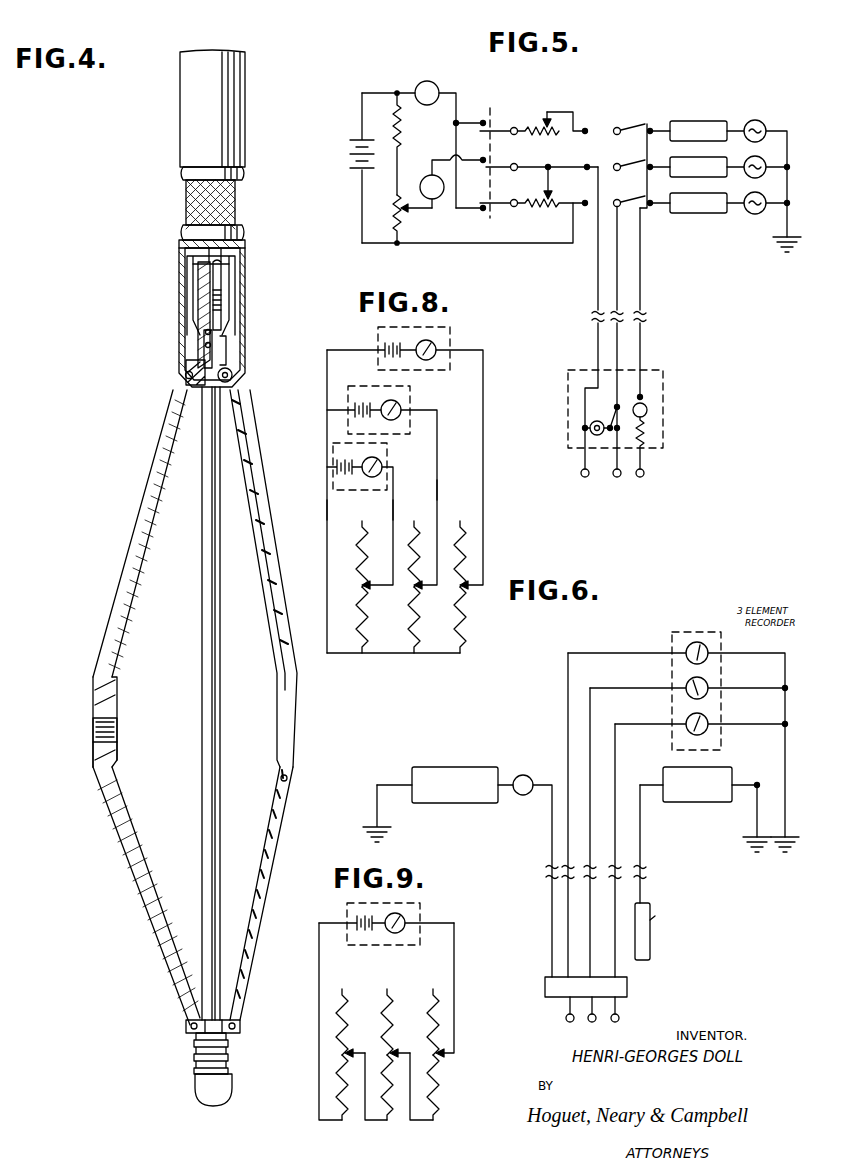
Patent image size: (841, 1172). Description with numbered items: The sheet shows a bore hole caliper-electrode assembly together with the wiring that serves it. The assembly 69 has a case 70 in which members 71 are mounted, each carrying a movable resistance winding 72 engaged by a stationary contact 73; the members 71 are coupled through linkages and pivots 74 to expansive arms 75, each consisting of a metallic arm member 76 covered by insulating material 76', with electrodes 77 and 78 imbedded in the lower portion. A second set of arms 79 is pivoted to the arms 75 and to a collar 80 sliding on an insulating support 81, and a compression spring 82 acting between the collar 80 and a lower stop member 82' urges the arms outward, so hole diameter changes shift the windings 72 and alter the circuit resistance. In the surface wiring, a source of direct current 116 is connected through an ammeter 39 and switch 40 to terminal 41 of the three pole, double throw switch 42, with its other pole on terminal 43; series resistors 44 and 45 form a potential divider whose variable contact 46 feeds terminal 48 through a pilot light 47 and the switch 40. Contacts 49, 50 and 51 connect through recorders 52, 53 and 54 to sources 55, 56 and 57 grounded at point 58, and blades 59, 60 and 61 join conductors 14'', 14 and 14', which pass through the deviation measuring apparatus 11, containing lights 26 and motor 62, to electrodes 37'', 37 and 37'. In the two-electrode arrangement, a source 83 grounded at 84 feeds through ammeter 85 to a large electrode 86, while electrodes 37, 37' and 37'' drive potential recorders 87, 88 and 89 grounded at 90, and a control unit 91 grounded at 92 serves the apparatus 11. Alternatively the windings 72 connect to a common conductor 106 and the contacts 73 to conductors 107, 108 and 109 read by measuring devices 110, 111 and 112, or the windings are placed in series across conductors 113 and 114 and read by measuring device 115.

In FIG. 4, the deviation measuring instrument 11 is at (177, 141).
In FIG. 5, the deviation measuring instrument 11 is at (567, 396).
In FIG. 6, the deviation measuring instrument 11 is at (650, 962).
In FIG. 5, the conductor 14 is at (575, 318).
In FIG. 5, the conductor 14' is at (646, 338).
In FIG. 5, the conductor 14'' is at (669, 302).
In FIG. 5, the lights 26 is at (590, 436).
In FIG. 5, the electrode 37 is at (560, 478).
In FIG. 6, the electrode 37 is at (553, 1014).
In FIG. 5, the middle electrode 37' is at (617, 486).
In FIG. 6, the middle electrode 37' is at (578, 1020).
In FIG. 5, the electrode 37'' is at (663, 469).
In FIG. 6, the electrode 37'' is at (641, 1009).
In FIG. 5, the ammeter 39 is at (430, 82).
In FIG. 5, the switch 40 is at (490, 121).
In FIG. 5, the terminal 41 is at (585, 128).
In FIG. 5, the three pole, double throw switch 42 is at (608, 121).
In FIG. 5, the second terminal 43 is at (574, 240).
In FIG. 5, the series resistor 44 is at (396, 210).
In FIG. 5, the series resistor 45 is at (399, 128).
In FIG. 5, the variable contact 46 is at (403, 212).
In FIG. 5, the pilot light 47 is at (441, 200).
In FIG. 5, the third terminal 48 is at (588, 166).
In FIG. 5, the contact 49 is at (650, 129).
In FIG. 5, the contact 50 is at (651, 165).
In FIG. 5, the contact 51 is at (650, 206).
In FIG. 5, the recorder 52 is at (715, 120).
In FIG. 5, the recorder 53 is at (727, 165).
In FIG. 5, the recorder 54 is at (695, 214).
In FIG. 5, the source of electrical energy 55 is at (762, 120).
In FIG. 5, the source of electrical energy 56 is at (767, 166).
In FIG. 5, the source of electrical energy 57 is at (765, 215).
In FIG. 5, the ground point 58 is at (782, 250).
In FIG. 5, the blade 59 is at (627, 119).
In FIG. 5, the blade 60 is at (616, 157).
In FIG. 5, the blade 61 is at (618, 192).
In FIG. 5, the motor 62 is at (647, 410).
In FIG. 4, the assembly 69 is at (248, 349).
In FIG. 4, the case 70 is at (180, 345).
In FIG. 4, the member 71 is at (200, 312).
In FIG. 4, the movable resistance winding 72 is at (197, 298).
In FIG. 8, the movable resistance winding 72 is at (458, 628).
In FIG. 9, the movable resistance winding 72 is at (344, 1112).
In FIG. 4, the stationary contact 73 is at (222, 262).
In FIG. 8, the stationary contact 73 is at (370, 582).
In FIG. 9, the stationary contact 73 is at (352, 1050).
In FIG. 4, the pivot 74 is at (233, 374).
In FIG. 4, the expansive arm 75 is at (262, 567).
In FIG. 4, the metallic arm member 76 is at (134, 533).
In FIG. 4, the insulating material 76' is at (96, 680).
In FIG. 4, the electrode 77 is at (95, 727).
In FIG. 4, the electrode 78 is at (95, 748).
In FIG. 4, the arm 79 is at (135, 866).
In FIG. 4, the collar 80 is at (224, 1035).
In FIG. 4, the insulating support 81 is at (206, 740).
In FIG. 4, the compression spring 82 is at (188, 1053).
In FIG. 4, the lower stop member 82' is at (232, 1090).
In FIG. 6, the source of electrical energy 83 is at (462, 767).
In FIG. 6, the ground 84 is at (374, 822).
In FIG. 6, the ammeter 85 is at (540, 766).
In FIG. 6, the electrode 86 is at (545, 985).
In FIG. 6, the potential indicating recorder 87 is at (686, 650).
In FIG. 6, the potential indicating recorder 88 is at (686, 686).
In FIG. 6, the potential indicating recorder 89 is at (686, 722).
In FIG. 6, the ground 90 is at (785, 852).
In FIG. 6, the control unit 91 is at (730, 767).
In FIG. 6, the ground 92 is at (745, 843).
In FIG. 8, the conductor 106 is at (328, 510).
In FIG. 8, the conductor 107 is at (393, 510).
In FIG. 8, the conductor 108 is at (437, 492).
In FIG. 8, the conductor 109 is at (483, 450).
In FIG. 8, the measuring device 110 is at (388, 456).
In FIG. 8, the measuring device 111 is at (410, 400).
In FIG. 8, the measuring device 112 is at (451, 333).
In FIG. 9, the conductor 113 is at (320, 968).
In FIG. 9, the conductor 114 is at (454, 960).
In FIG. 9, the measuring device 115 is at (422, 915).
In FIG. 5, the source of direct current 116 is at (352, 150).